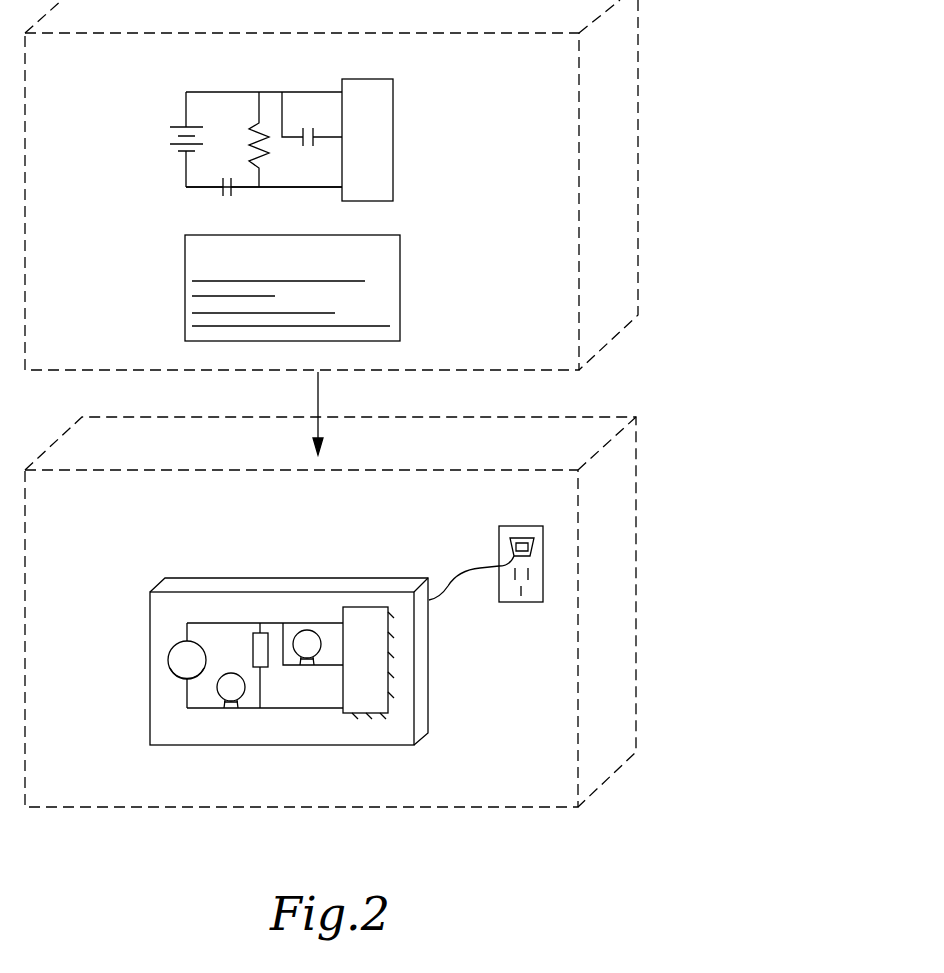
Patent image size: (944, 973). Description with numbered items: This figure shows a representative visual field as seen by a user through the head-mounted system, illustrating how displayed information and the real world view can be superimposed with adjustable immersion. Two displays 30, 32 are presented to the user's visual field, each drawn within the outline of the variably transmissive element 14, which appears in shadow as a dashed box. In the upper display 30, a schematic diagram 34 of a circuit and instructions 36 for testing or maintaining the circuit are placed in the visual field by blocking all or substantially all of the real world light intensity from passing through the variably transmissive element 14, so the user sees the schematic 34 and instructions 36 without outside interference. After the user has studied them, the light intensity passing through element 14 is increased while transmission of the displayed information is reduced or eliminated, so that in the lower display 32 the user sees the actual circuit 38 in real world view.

The variably transmissive element 14 is at (640, 115).
The display 30 is at (259, 155).
The display 32 is at (293, 635).
The schematic diagram 34 is at (402, 136).
The instructions 36 is at (402, 290).
The actual circuit 38 is at (433, 661).